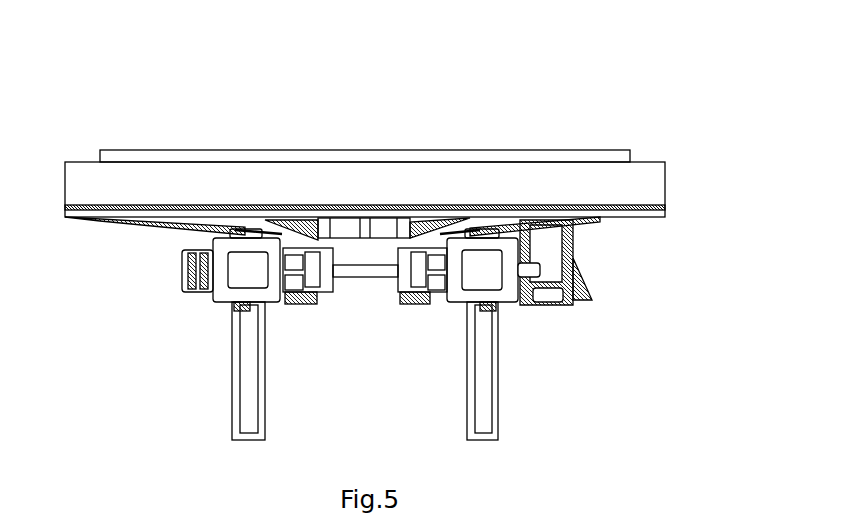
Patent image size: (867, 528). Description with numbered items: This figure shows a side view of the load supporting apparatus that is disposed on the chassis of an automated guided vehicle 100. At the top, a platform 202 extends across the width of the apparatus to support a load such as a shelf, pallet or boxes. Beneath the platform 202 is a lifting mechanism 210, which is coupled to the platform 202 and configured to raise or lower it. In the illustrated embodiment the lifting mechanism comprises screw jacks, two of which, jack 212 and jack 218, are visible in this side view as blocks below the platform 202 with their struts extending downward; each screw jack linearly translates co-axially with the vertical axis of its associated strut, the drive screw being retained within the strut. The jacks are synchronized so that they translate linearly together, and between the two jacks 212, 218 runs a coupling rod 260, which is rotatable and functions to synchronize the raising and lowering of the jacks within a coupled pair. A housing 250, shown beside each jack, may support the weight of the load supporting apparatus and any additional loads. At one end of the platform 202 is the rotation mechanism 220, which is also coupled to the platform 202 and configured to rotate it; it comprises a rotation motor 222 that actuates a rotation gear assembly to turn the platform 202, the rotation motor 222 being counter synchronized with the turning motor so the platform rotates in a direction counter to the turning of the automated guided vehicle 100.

The automated guided vehicle 100 is at (423, 236).
The platform 202 is at (537, 155).
The lifting mechanism 210 is at (137, 263).
The jack 212 is at (243, 235).
The jack 218 is at (480, 235).
The rotation mechanism 220 is at (614, 245).
The rotation motor 222 is at (563, 252).
The housing 250 is at (253, 275).
The coupling rod 260 is at (350, 266).